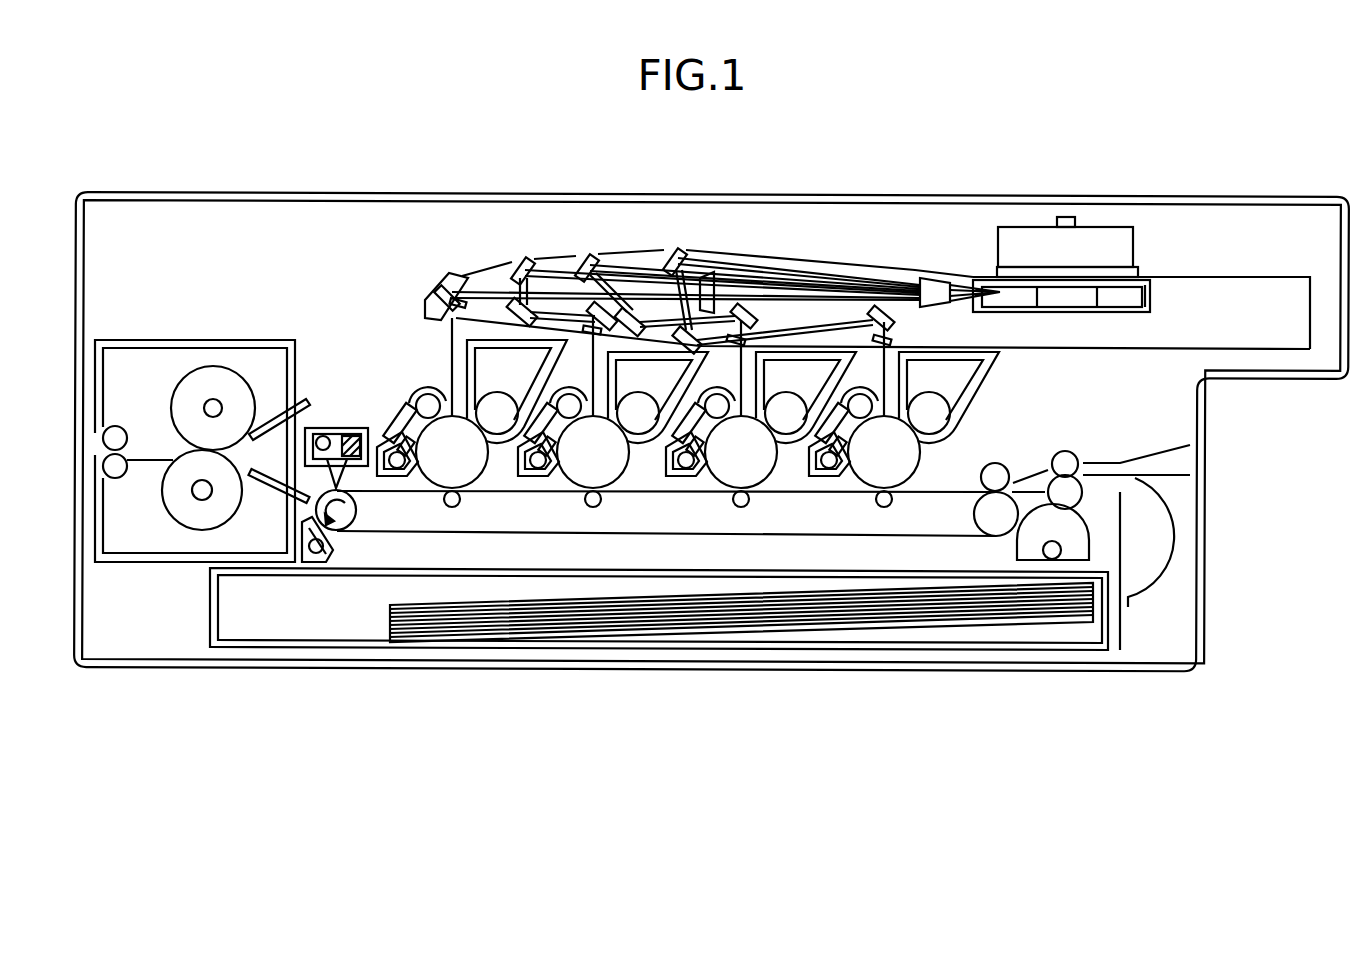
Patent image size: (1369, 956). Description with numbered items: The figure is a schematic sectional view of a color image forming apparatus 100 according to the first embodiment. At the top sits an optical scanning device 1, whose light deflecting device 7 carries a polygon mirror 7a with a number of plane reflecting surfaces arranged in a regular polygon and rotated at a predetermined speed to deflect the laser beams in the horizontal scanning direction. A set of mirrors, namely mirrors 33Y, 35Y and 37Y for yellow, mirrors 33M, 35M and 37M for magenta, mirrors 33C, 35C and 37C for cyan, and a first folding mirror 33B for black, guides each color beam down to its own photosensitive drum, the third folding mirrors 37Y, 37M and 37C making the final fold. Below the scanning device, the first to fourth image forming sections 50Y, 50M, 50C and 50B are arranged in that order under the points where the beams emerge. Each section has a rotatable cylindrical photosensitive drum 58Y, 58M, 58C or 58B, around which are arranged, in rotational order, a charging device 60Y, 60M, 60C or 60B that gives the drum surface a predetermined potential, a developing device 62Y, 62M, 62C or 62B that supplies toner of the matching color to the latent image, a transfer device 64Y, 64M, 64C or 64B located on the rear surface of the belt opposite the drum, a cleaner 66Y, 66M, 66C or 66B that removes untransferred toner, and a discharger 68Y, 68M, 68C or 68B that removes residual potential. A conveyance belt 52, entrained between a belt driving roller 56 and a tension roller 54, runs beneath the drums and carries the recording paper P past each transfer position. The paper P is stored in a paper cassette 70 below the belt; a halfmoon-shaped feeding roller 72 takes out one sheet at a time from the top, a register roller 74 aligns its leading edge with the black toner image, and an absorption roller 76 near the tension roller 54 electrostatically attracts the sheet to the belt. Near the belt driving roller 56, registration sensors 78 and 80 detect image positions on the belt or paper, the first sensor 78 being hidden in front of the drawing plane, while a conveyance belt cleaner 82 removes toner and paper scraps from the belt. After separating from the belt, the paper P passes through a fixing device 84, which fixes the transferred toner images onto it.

The optical scanning device 1 is at (1012, 350).
The image forming apparatus 100 is at (1122, 193).
The light deflecting device 7 is at (1134, 258).
The polygon mirror 7a is at (1136, 296).
The first folding mirror 33B is at (431, 292).
The mirror 33C is at (517, 263).
The mirror 33M is at (580, 258).
The mirror 33Y is at (690, 256).
The mirror 35C is at (490, 287).
The mirror 35M is at (636, 318).
The mirror 35Y is at (686, 328).
The third folding mirror 37C is at (606, 308).
The third folding mirror 37M is at (760, 318).
The third folding mirror 37Y is at (892, 322).
The image forming section 50B is at (483, 381).
The image forming section 50C is at (624, 393).
The image forming section 50M is at (772, 393).
The image forming section 50Y is at (915, 393).
The conveyance belt 52 is at (942, 490).
The tension roller 54 is at (1000, 523).
The belt driving roller 56 is at (347, 521).
The photosensitive drum 58B is at (462, 478).
The photosensitive drum 58C is at (612, 482).
The photosensitive drum 58M is at (750, 470).
The photosensitive drum 58Y is at (895, 478).
The charging device 60B is at (428, 394).
The charging device 60C is at (566, 394).
The charging device 60M is at (720, 394).
The charging device 60Y is at (864, 394).
The developing device 62B is at (505, 426).
The developing device 62C is at (645, 432).
The developing device 62M is at (792, 432).
The developing device 62Y is at (951, 414).
The transfer device 64B is at (450, 507).
The transfer device 64C is at (592, 507).
The transfer device 64M is at (748, 507).
The transfer device 64Y is at (887, 507).
The cleaner 66B is at (398, 470).
The cleaner 66C is at (553, 473).
The cleaner 66M is at (695, 480).
The cleaner 66Y is at (840, 478).
The discharger 68B is at (400, 430).
The discharger 68C is at (545, 445).
The discharger 68M is at (692, 445).
The discharger 68Y is at (856, 394).
The paper cassette 70 is at (1068, 648).
The feeding roller 72 is at (1068, 530).
The register roller 74 is at (1066, 452).
The absorption roller 76 is at (998, 472).
The registration sensor 78 is at (327, 427).
The registration sensor 80 is at (342, 421).
The conveyance belt cleaner 82 is at (312, 562).
The fixing device 84 is at (152, 556).
The recording paper P is at (968, 625).